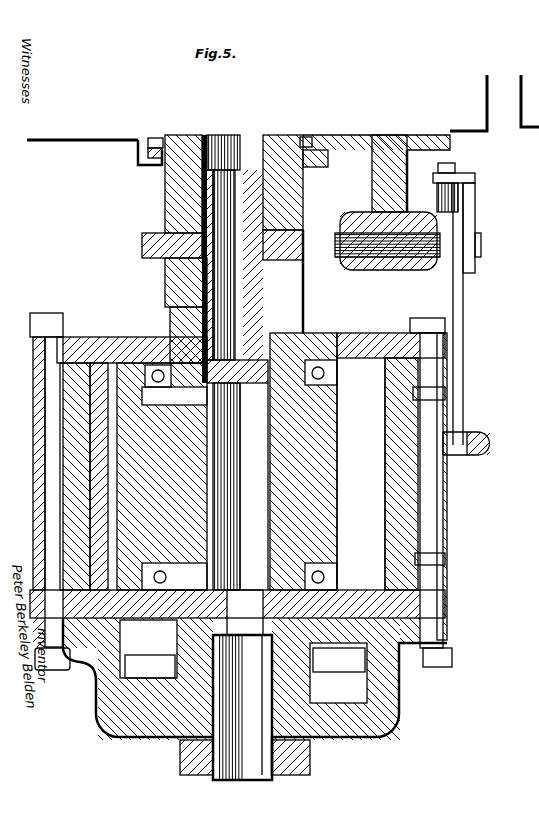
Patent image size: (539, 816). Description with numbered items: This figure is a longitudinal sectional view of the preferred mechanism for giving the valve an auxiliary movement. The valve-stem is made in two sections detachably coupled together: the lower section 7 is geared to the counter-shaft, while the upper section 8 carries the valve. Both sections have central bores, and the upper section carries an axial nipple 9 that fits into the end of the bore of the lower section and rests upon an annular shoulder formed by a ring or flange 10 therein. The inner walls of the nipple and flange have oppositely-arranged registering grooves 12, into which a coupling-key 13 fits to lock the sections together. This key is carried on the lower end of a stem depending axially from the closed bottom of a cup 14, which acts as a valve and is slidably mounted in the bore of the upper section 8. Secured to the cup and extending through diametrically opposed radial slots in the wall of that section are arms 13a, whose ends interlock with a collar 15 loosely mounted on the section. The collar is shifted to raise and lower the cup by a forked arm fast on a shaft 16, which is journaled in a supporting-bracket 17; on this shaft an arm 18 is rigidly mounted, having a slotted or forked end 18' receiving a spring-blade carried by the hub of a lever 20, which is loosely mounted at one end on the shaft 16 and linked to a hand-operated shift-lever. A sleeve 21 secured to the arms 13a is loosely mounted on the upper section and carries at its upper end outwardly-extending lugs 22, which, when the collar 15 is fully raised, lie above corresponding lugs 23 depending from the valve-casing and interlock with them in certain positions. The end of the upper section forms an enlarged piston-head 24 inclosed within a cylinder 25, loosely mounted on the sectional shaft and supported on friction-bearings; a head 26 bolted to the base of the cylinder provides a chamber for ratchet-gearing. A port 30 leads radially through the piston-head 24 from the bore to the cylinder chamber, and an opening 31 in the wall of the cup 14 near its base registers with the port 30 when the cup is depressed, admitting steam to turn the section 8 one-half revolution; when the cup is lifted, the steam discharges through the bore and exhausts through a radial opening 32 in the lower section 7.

The lower section of valve-stem 7 is at (315, 766).
The upper section of valve-stem 8 is at (168, 194).
The axial nipple 9 is at (237, 385).
The ring or flange 10 is at (264, 640).
The registering grooves 12 is at (170, 618).
The coupling-key 13 is at (242, 707).
The arms 13a is at (170, 283).
The cup 14 is at (285, 280).
The collar 15 is at (144, 252).
The shaft 16 is at (365, 232).
The supporting-bracket 17 is at (374, 160).
The arm 18 is at (490, 228).
The slotted or forked end 18' is at (466, 164).
The lever 20 is at (466, 340).
The sleeve 21 is at (166, 212).
The lugs 22 is at (157, 137).
The lugs 23 is at (140, 168).
The piston-head 24 is at (338, 483).
The cylinder 25 is at (420, 495).
The head 26 is at (400, 692).
The port 30 is at (160, 368).
The opening 31 is at (237, 356).
The radial opening 32 is at (180, 748).